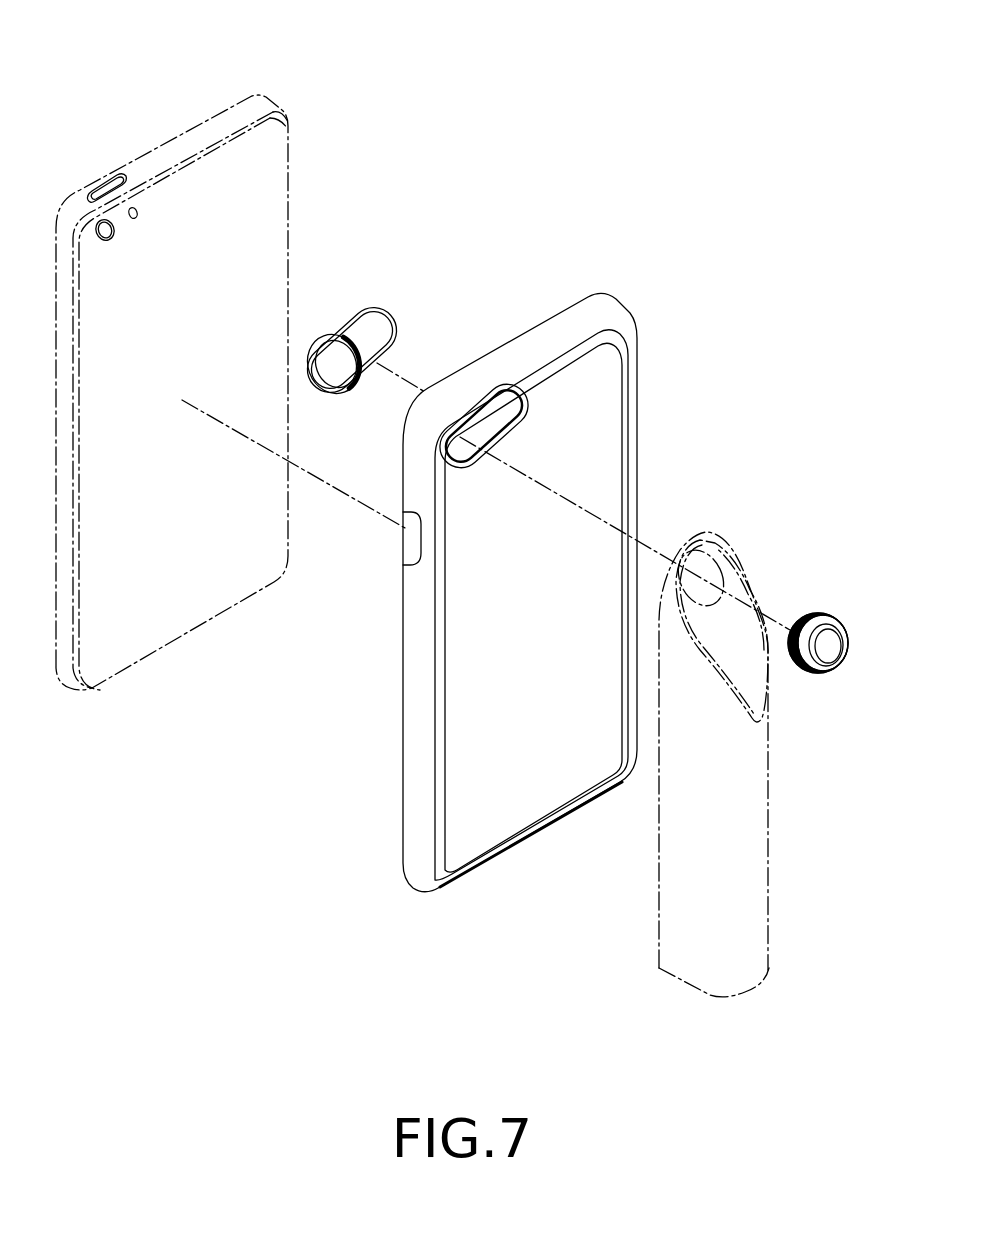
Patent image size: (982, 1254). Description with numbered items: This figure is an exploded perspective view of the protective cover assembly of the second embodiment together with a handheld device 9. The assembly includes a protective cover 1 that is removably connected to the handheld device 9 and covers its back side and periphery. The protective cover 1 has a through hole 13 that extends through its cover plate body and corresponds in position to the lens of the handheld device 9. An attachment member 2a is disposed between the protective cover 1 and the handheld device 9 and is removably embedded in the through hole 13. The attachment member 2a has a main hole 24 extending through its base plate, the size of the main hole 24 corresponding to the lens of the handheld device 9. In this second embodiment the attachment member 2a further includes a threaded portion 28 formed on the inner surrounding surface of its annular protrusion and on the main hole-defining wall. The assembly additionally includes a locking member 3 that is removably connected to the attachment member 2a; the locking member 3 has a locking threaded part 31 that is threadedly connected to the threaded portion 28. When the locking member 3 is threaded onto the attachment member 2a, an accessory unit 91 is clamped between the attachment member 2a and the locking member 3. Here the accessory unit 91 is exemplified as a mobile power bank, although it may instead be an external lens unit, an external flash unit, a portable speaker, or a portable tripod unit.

The protective cover 1 is at (520, 545).
The through hole 13 is at (487, 413).
The attachment member 2a is at (352, 340).
The main hole 24 is at (331, 366).
The threaded portion 28 is at (343, 387).
The locking member 3 is at (814, 650).
The locking threaded part 31 is at (803, 630).
The handheld device 9 is at (197, 108).
The accessory unit 91 is at (708, 868).